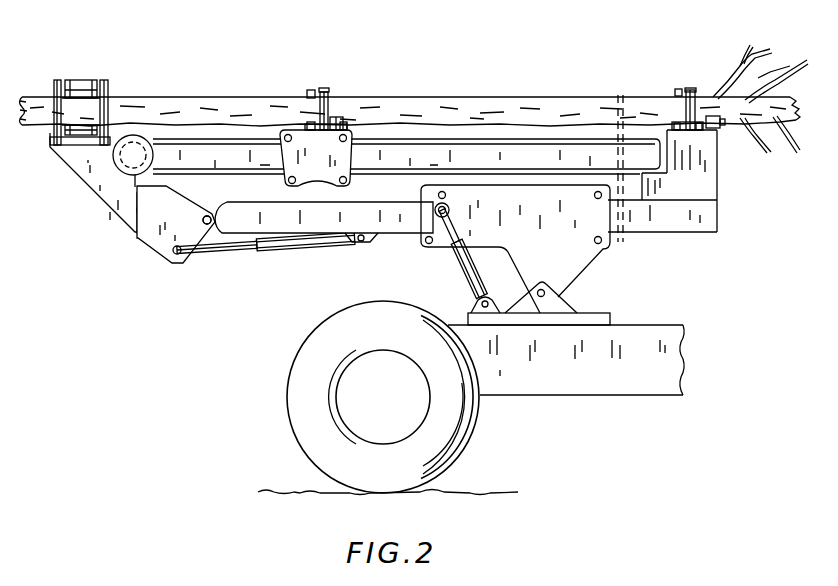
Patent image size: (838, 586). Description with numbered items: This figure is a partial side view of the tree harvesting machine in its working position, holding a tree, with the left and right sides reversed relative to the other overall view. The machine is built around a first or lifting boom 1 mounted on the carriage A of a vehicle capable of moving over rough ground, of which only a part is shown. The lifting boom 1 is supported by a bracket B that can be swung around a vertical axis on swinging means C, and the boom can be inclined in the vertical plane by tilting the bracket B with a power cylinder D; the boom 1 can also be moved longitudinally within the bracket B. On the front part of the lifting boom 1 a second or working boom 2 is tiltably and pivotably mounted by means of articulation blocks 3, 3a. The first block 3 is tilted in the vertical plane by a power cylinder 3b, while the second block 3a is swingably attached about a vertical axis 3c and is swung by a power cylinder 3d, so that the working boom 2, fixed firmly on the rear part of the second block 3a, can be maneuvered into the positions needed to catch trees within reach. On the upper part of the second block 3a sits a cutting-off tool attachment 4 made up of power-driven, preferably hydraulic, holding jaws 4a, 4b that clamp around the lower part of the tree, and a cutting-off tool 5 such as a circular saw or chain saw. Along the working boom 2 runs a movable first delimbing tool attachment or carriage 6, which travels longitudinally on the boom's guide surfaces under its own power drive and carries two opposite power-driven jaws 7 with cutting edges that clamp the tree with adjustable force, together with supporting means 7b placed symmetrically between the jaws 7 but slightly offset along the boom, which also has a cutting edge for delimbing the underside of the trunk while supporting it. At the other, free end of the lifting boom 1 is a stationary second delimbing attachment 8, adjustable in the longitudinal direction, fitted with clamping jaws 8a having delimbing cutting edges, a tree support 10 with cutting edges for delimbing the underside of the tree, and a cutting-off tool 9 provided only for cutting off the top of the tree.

The lifting boom 1 is at (250, 220).
The working boom 2 is at (203, 146).
The first articulation block 3 is at (167, 243).
The second articulation block 3a is at (108, 191).
The power cylinder 3b is at (300, 250).
The vertical axis 3c is at (137, 238).
The power cylinder 3d is at (175, 206).
The cutting-off tool attachment 4 is at (88, 72).
The holding jaw 4a is at (100, 105).
The holding jaw 4b is at (92, 80).
The cutting-off tool 5 is at (72, 84).
The first delimbing tool attachment 6 is at (350, 150).
The power-driven jaws 7 is at (324, 90).
The supporting means 7b is at (340, 118).
The second delimbing attachment 8 is at (688, 153).
The clamping jaws 8a is at (677, 89).
The cutting-off tool 9 is at (703, 128).
The tree support 10 is at (724, 125).
The carriage A is at (637, 334).
The bracket B is at (583, 252).
The swinging means C is at (553, 304).
The power cylinder D is at (470, 268).